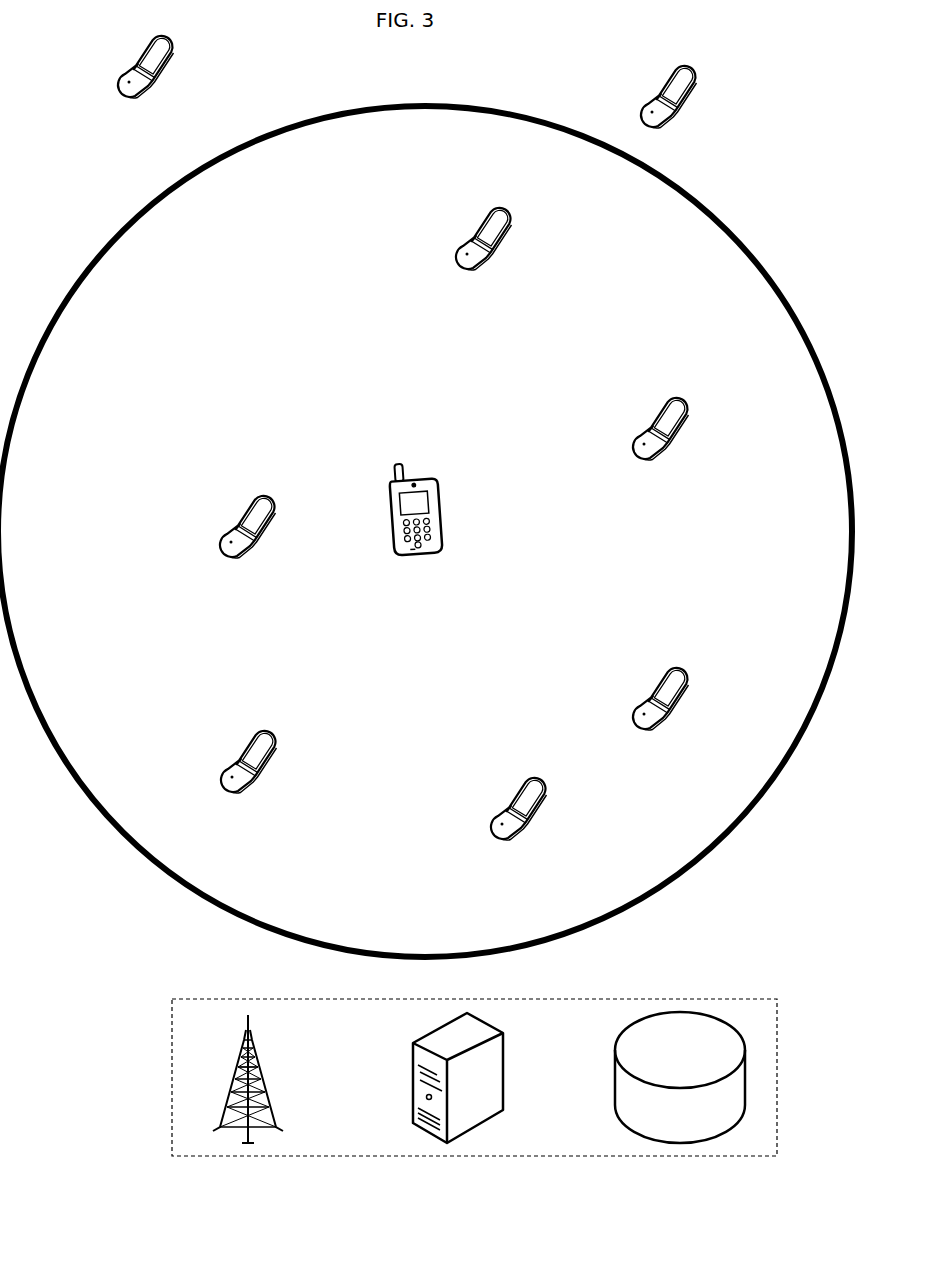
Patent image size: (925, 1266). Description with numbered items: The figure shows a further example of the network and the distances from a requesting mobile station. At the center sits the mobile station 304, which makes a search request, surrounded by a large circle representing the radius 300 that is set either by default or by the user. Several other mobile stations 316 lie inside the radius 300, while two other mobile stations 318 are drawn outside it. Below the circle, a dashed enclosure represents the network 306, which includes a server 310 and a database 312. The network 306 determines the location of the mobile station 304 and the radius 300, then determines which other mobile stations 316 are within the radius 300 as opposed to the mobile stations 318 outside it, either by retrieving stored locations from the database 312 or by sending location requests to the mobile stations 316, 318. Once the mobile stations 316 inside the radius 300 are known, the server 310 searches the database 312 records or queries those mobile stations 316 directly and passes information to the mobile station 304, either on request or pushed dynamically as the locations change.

The radius 300 is at (108, 244).
The mobile station 304 is at (415, 529).
The network 306 is at (170, 1079).
The server 310 is at (412, 1080).
The database 312 is at (680, 1077).
The other mobile stations within the radius 316 is at (459, 540).
The other mobile stations outside the radius 318 is at (405, 103).